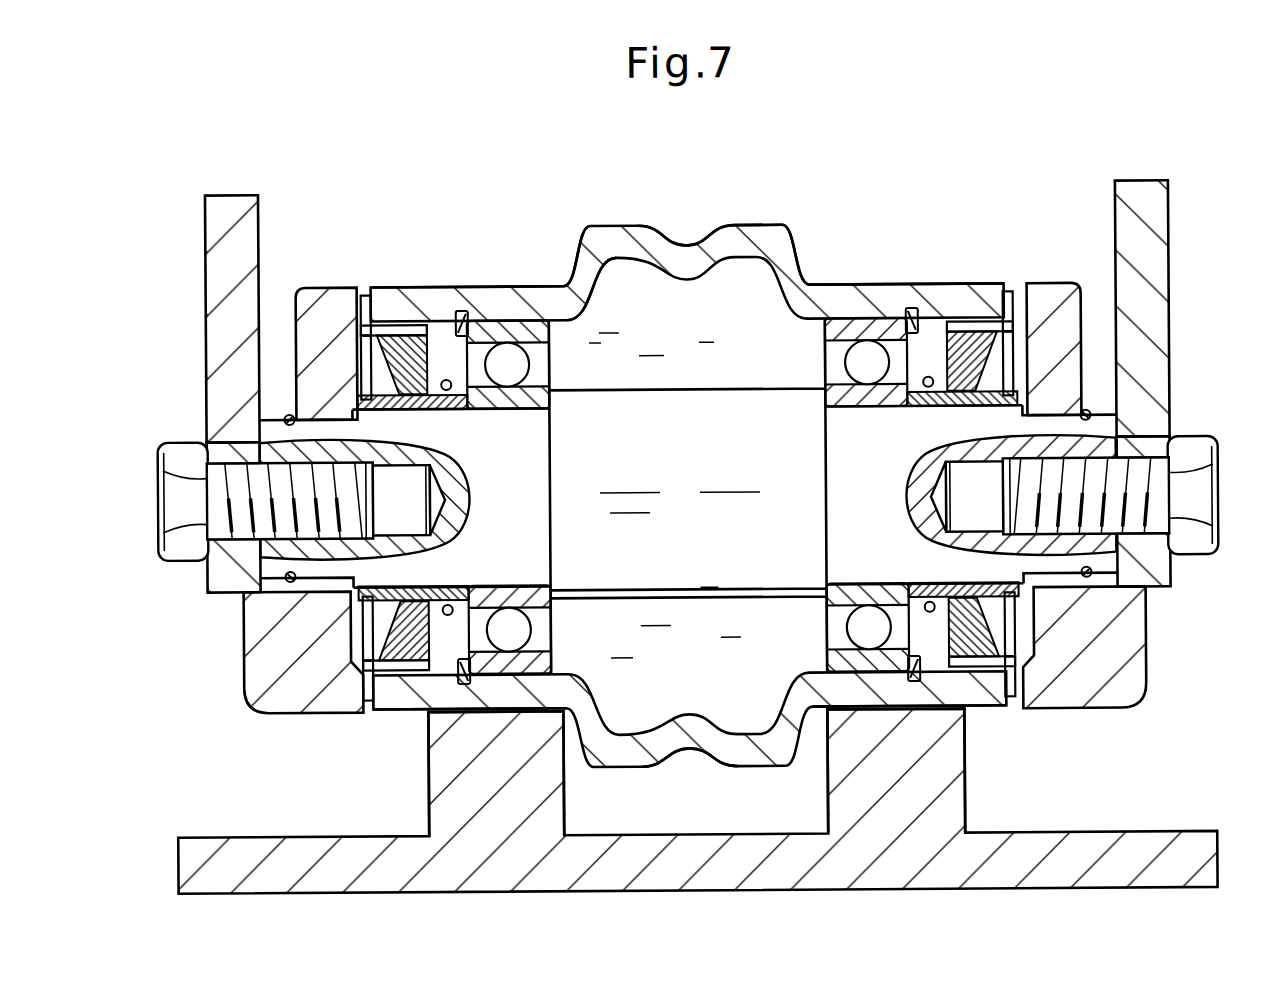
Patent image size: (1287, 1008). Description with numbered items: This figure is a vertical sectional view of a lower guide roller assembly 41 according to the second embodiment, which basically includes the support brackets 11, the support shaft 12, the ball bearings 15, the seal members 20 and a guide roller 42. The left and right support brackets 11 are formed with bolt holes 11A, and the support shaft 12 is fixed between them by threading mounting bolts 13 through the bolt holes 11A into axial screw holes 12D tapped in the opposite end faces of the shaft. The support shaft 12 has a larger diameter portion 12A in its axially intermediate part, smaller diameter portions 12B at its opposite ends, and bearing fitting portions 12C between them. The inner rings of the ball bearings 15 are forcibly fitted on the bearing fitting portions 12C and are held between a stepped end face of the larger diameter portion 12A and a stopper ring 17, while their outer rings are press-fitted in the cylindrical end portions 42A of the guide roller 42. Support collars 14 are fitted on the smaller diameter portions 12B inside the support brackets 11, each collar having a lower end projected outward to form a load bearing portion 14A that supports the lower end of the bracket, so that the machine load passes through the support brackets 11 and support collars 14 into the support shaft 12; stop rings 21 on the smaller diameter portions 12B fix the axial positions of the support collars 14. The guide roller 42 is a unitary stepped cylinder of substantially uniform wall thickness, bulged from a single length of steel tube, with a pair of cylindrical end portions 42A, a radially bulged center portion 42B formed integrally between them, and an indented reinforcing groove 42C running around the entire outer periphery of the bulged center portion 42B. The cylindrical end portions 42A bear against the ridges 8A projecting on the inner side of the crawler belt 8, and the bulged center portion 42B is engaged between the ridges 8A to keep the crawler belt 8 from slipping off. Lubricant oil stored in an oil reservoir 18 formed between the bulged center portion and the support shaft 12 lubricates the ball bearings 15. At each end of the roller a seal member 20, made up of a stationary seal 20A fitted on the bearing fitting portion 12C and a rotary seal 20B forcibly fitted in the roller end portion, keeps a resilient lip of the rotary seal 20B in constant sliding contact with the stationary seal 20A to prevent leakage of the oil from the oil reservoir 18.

The crawler belt 8 is at (1170, 864).
The ridges 8A is at (565, 802).
The support brackets 11 is at (225, 278).
The bolt holes 11A is at (215, 528).
The support shaft 12 is at (687, 406).
The larger diameter portion 12A is at (617, 407).
The smaller diameter portions 12B is at (275, 432).
The bearing fitting portions 12C is at (494, 427).
The screw holes 12D is at (285, 482).
The mounting bolts 13 is at (175, 517).
The support collars 14 is at (704, 575).
The load bearing portion 14A is at (232, 588).
The ball bearings 15 is at (510, 650).
The stopper ring 17 is at (460, 314).
The oil reservoir 18 is at (690, 708).
The seal members 20 is at (350, 322).
The stationary seal 20A is at (352, 628).
The rotary seal 20B is at (405, 676).
The stop rings 21 is at (288, 416).
The lower guide roller assembly 41 is at (682, 469).
The guide roller 42 is at (545, 280).
The cylindrical end portions 42A is at (396, 302).
The radially bulged center portion 42B is at (768, 230).
The indented reinforcing groove 42C is at (687, 248).